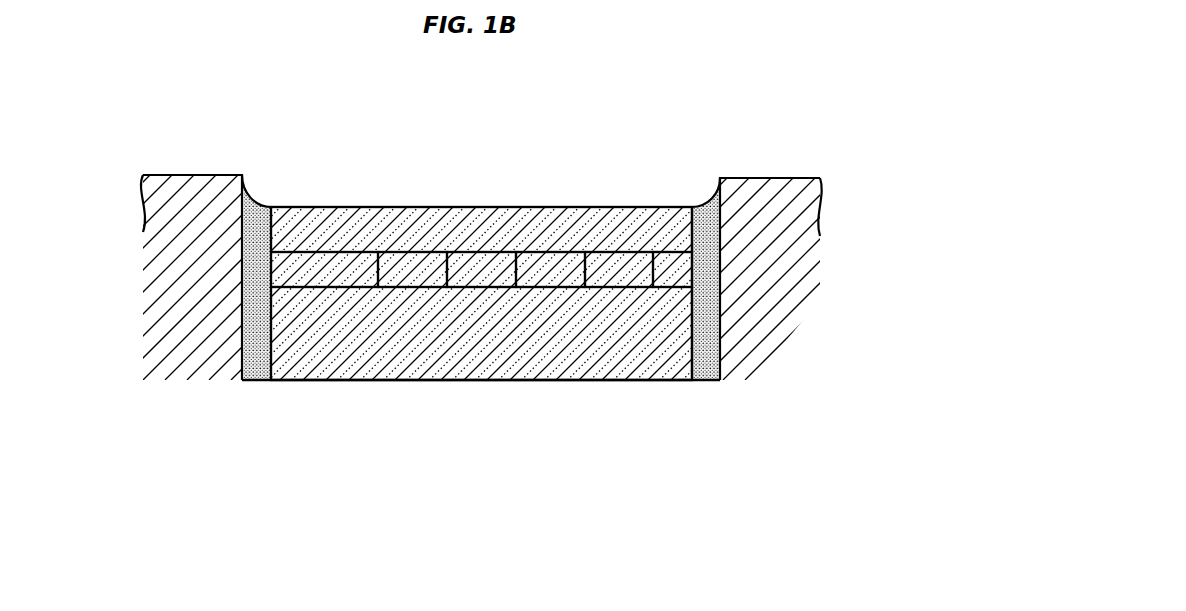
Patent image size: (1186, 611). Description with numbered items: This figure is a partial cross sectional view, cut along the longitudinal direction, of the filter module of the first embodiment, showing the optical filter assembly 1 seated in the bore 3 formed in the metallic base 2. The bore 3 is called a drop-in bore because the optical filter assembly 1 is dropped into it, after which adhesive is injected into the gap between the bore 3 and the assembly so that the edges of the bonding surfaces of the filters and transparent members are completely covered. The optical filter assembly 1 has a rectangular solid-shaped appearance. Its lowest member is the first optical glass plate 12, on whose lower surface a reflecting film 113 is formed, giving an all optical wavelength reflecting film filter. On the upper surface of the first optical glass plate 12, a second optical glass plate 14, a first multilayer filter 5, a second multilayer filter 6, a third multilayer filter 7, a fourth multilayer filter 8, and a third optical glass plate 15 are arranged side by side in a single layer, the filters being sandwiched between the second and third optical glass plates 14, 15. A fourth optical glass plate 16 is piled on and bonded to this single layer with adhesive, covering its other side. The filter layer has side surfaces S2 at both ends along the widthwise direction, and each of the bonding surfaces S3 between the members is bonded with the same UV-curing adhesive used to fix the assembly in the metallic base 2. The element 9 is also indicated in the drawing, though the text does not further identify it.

The optical filter assembly 1 is at (427, 205).
The metallic base 2 is at (193, 182).
The bore 3 is at (634, 172).
The first multilayer filter 5 is at (410, 275).
The second multilayer filter 6 is at (477, 275).
The third multilayer filter 7 is at (541, 262).
The fourth multilayer filter 8 is at (655, 250).
The optical element 9 is at (630, 358).
The first optical glass plate 12 is at (668, 323).
The second optical glass plate 14 is at (308, 275).
The third optical glass plate 15 is at (678, 268).
The fourth optical glass plate 16 is at (648, 222).
The reflecting film 113 is at (305, 382).
The side surfaces S2 is at (689, 352).
The bonding surfaces S3 is at (337, 246).